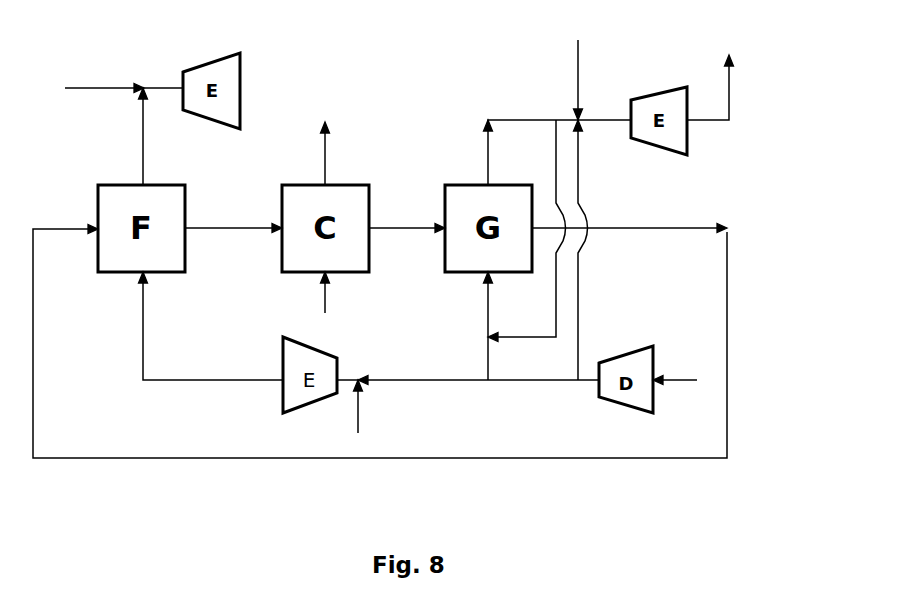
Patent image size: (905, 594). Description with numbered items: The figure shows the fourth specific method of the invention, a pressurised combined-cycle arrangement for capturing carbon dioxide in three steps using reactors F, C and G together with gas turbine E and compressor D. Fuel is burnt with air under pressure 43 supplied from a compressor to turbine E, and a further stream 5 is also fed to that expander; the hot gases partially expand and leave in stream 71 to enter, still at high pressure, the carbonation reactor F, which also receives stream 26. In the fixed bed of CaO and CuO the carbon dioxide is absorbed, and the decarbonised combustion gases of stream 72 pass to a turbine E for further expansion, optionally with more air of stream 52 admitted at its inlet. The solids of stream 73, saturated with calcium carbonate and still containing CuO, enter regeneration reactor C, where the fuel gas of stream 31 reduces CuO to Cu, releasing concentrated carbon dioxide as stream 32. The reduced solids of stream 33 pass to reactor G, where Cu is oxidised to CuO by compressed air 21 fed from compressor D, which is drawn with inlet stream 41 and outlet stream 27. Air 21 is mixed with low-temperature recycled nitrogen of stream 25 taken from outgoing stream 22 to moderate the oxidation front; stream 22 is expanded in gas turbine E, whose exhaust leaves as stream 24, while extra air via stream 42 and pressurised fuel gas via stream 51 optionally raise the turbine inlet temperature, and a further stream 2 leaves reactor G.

The product stream / electricity output 2 is at (629, 218).
The feed stream to expander 5 is at (367, 406).
The compressed air stream 21 is at (476, 326).
The outgoing gas stream from reactor G 22 is at (545, 152).
The outlet stream from expander 24 is at (722, 87).
The recycled nitrogen stream 25 is at (527, 231).
The feed stream to F 26 is at (380, 328).
The stream from D 27 is at (543, 370).
The fuel gas stream 31 is at (313, 294).
The concentrated CO2 stream 32 is at (313, 153).
The reduced solids stream 33 is at (407, 218).
The feed stream to D 41 is at (675, 371).
The additional air stream 42 is at (632, 250).
The pressurised air stream 43 is at (412, 370).
The pressurised fuel gas stream 51 is at (614, 69).
The additional air stream to turbine inlet 52 is at (89, 77).
The combustion gas stream 71 is at (197, 326).
The decarbonised combustion gas stream 72 is at (147, 136).
The carbonated solids stream 73 is at (233, 219).